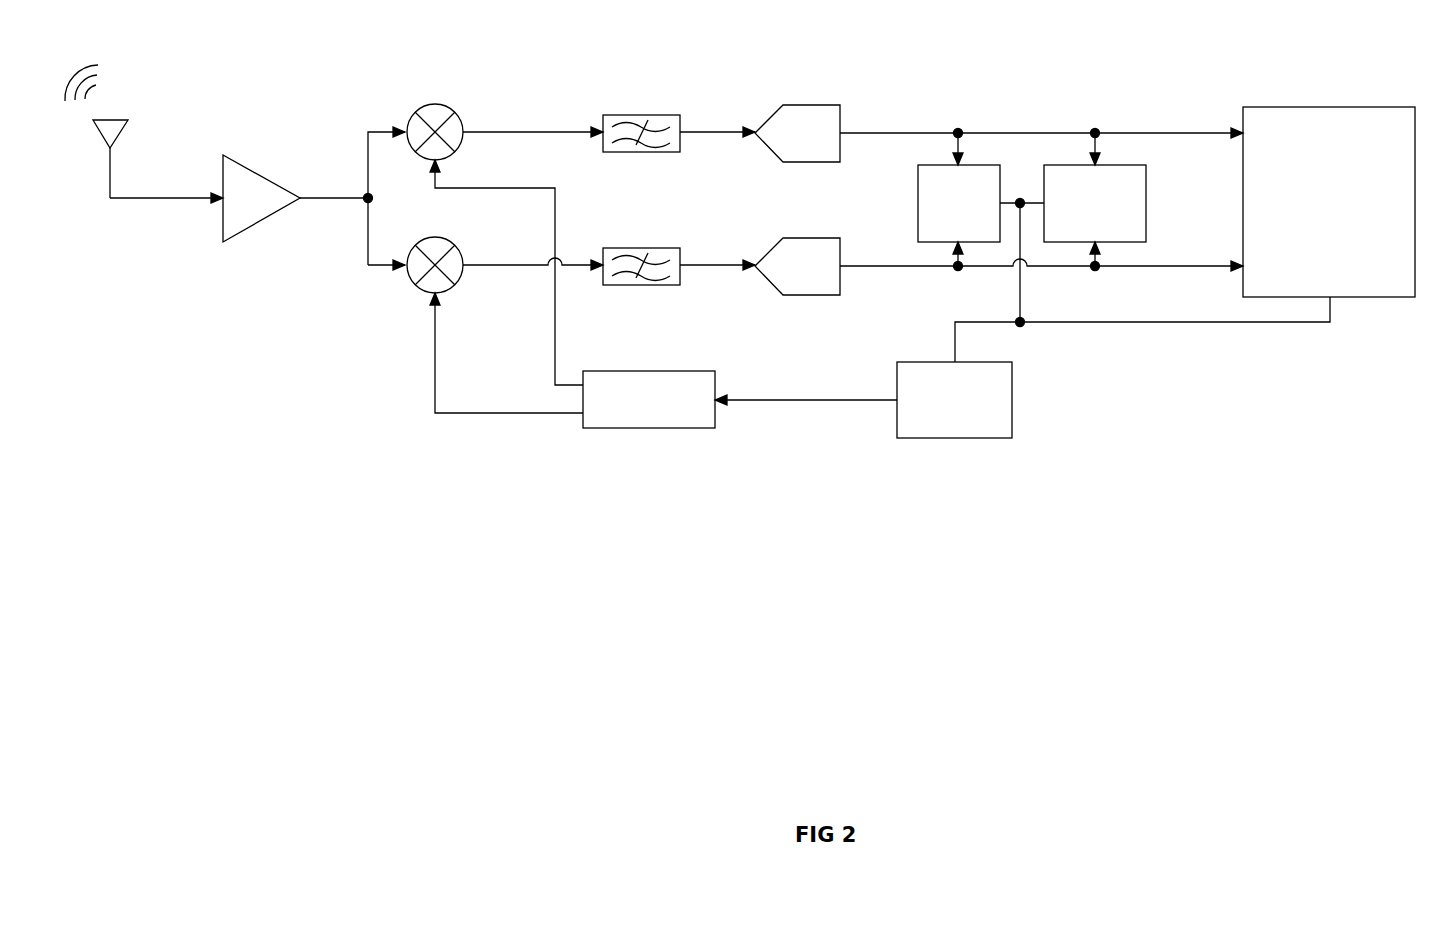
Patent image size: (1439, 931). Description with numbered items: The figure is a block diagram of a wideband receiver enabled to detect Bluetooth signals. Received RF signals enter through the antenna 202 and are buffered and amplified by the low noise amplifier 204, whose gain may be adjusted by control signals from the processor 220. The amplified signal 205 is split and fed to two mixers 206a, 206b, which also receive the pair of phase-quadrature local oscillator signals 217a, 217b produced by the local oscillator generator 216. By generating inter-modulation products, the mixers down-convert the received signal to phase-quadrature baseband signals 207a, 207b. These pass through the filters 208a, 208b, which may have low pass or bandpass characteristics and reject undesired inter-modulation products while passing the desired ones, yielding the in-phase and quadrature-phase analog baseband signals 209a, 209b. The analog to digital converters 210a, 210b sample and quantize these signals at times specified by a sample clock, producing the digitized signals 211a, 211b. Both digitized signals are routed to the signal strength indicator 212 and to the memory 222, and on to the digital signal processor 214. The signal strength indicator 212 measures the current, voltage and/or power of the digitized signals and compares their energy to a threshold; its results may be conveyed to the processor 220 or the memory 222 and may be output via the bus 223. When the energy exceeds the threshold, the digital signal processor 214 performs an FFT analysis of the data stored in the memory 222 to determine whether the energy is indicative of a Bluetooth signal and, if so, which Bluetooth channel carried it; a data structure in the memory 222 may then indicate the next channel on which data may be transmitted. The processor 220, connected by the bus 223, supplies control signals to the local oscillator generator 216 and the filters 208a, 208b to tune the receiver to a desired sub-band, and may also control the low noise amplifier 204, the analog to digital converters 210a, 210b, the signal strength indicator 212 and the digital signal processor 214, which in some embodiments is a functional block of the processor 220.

The antenna 202 is at (116, 120).
The low noise amplifier 204 is at (223, 155).
The signal 205 is at (336, 189).
The mixer 206a is at (416, 108).
The mixer 206b is at (416, 288).
The phase-quadrature baseband signal 207a is at (533, 124).
The phase-quadrature baseband signal 207b is at (533, 257).
The filter 208a is at (630, 115).
The filter 208b is at (630, 248).
The analog signal 209a is at (717, 124).
The analog signal 209b is at (717, 257).
The analog to digital converter 210a is at (810, 105).
The analog to digital converter 210b is at (810, 238).
The digitized signal 211a is at (1041, 124).
The digitized signal 211b is at (1041, 257).
The signal strength indicator 212 is at (918, 204).
The digital signal processor 214 is at (1255, 107).
The local oscillator generator 216 is at (630, 371).
The local oscillator signal 217a is at (506, 272).
The local oscillator signal 217b is at (506, 354).
The processor 220 is at (1012, 403).
The memory 222 is at (1146, 205).
The bus 223 is at (1142, 329).